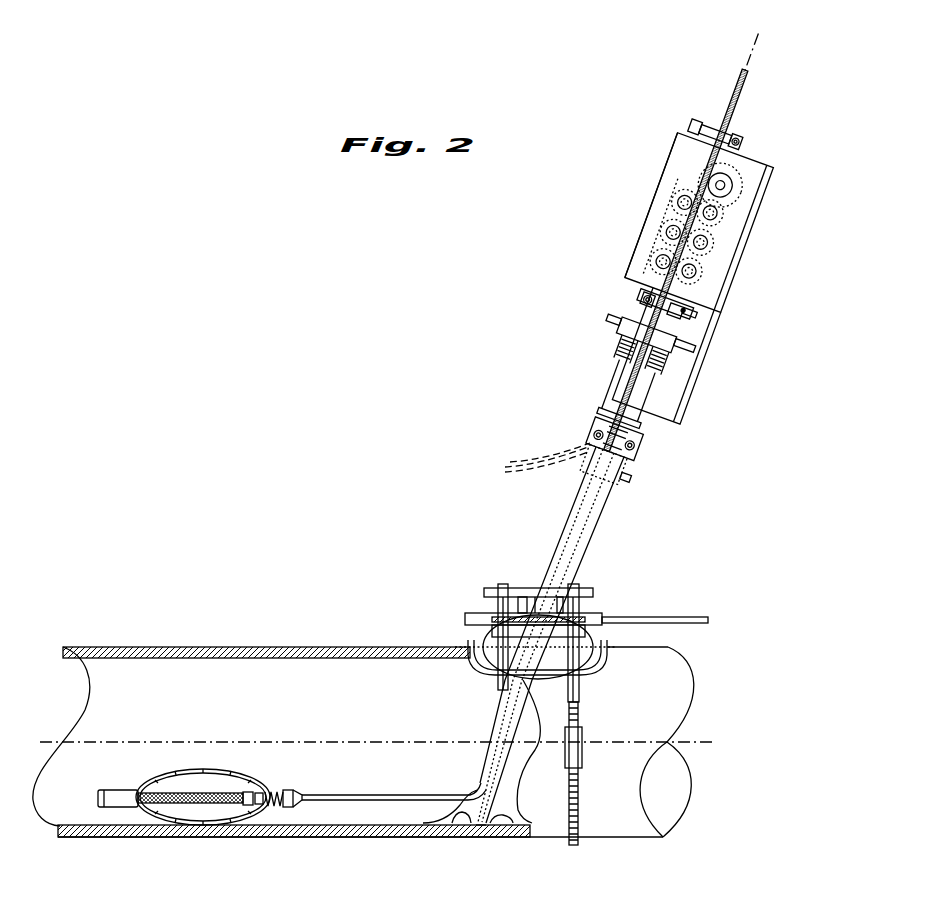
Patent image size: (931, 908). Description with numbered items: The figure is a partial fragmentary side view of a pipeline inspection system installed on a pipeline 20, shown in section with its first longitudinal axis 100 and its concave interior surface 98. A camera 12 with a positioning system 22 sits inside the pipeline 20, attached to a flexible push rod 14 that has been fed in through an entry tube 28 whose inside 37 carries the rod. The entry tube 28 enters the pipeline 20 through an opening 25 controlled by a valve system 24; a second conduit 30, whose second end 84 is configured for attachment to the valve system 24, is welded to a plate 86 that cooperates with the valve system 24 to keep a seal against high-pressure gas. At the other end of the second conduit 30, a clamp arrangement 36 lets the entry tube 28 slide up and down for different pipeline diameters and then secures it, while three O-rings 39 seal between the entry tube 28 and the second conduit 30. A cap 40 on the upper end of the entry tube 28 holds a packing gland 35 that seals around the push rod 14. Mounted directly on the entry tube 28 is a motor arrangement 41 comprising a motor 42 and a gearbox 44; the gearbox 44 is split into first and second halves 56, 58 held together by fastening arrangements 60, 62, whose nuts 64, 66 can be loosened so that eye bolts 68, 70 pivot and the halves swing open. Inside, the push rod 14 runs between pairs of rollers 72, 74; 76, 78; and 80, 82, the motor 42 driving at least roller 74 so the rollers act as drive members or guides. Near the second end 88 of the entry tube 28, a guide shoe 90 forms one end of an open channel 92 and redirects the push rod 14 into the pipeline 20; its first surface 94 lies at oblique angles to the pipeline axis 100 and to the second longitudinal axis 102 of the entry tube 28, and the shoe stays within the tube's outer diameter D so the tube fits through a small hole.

The camera 12 is at (125, 788).
The push rod 14 is at (742, 74).
The pipeline 20 is at (150, 647).
The positioning system 22 is at (210, 762).
The valve system 24 is at (466, 614).
The opening 25 is at (583, 672).
The entry tube 28 is at (640, 418).
The second conduit 30 is at (608, 505).
The packing gland 35 is at (623, 363).
The clamp arrangement 36 is at (588, 437).
The inside of the entry tube 37 is at (477, 788).
The O-rings 39 is at (547, 461).
The cap 40 is at (620, 328).
The motor arrangement 41 is at (639, 236).
The motor 42 is at (743, 184).
The gearbox 44 is at (669, 138).
The first half of the gearbox 56 is at (656, 196).
The second half of the gearbox 58 is at (737, 262).
The fastening arrangement 60 is at (753, 134).
The fastening arrangement 62 is at (641, 297).
The nut 64 is at (702, 125).
The nut 66 is at (683, 317).
The eye bolt 68 is at (698, 130).
The eye bolt 70 is at (684, 313).
The roller 72 is at (672, 185).
The roller 74 is at (738, 214).
The roller 76 is at (655, 231).
The roller 78 is at (727, 245).
The roller 80 is at (648, 262).
The roller 82 is at (706, 289).
The second end of the second conduit 84 is at (535, 610).
The plate 86 is at (585, 612).
The second end of the entry tube 88 is at (513, 823).
The guide shoe 90 is at (475, 834).
The open channel 92 is at (457, 806).
The first surface 94 is at (461, 814).
The interior surface 98 is at (82, 817).
The first longitudinal axis 100 is at (52, 740).
The second longitudinal axis 102 is at (752, 45).
The diameter D is at (535, 758).